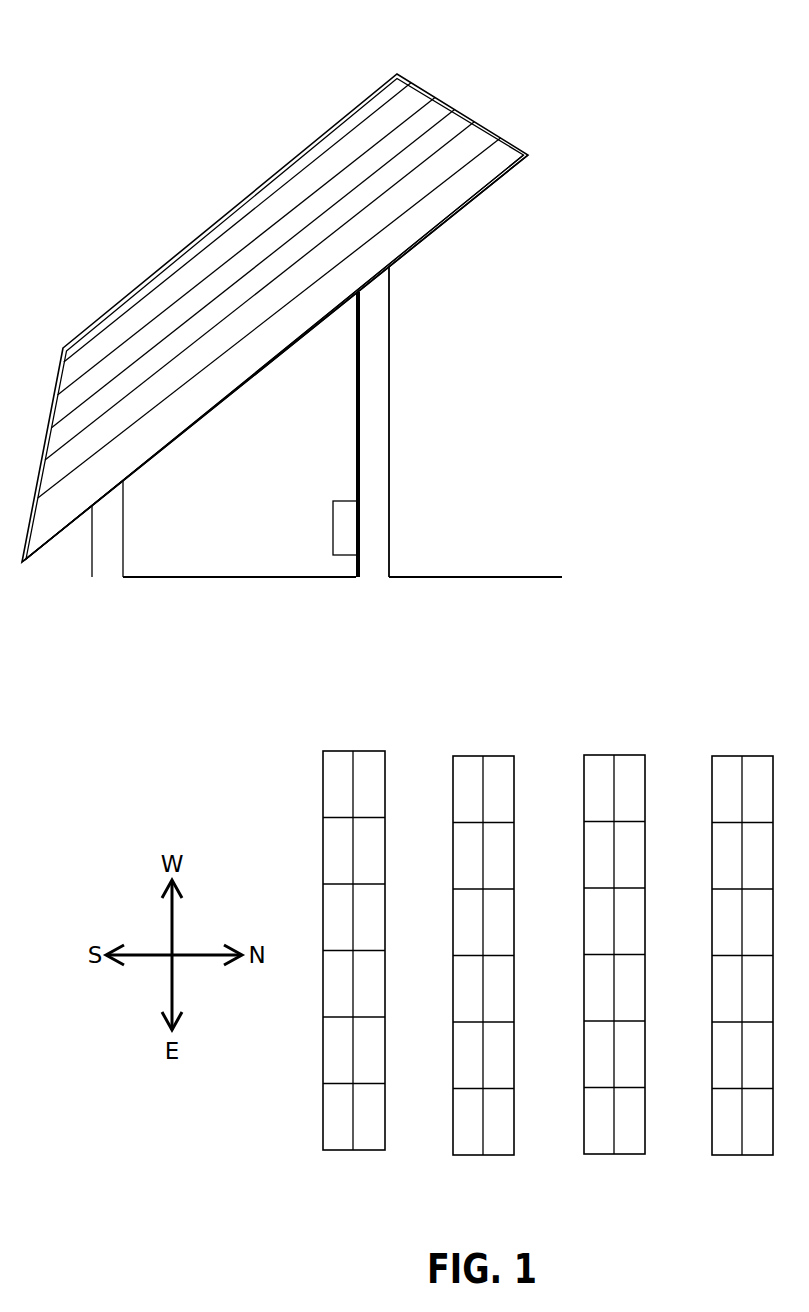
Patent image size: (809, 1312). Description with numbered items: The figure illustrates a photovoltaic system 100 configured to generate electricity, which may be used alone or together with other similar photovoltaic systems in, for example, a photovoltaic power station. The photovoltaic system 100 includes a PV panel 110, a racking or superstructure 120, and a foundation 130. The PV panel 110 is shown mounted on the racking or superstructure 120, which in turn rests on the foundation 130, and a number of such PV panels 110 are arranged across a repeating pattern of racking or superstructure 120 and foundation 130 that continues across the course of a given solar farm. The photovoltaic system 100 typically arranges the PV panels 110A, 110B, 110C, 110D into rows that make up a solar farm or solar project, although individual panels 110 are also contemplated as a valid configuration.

The photovoltaic system 100 is at (221, 42).
The PV panel 110 is at (446, 106).
The PV panel 110A is at (356, 922).
The PV panel 110B is at (486, 924).
The PV panel 110C is at (619, 924).
The PV panel 110D is at (748, 924).
The racking or superstructure 120 is at (275, 358).
The foundation 130 is at (362, 466).